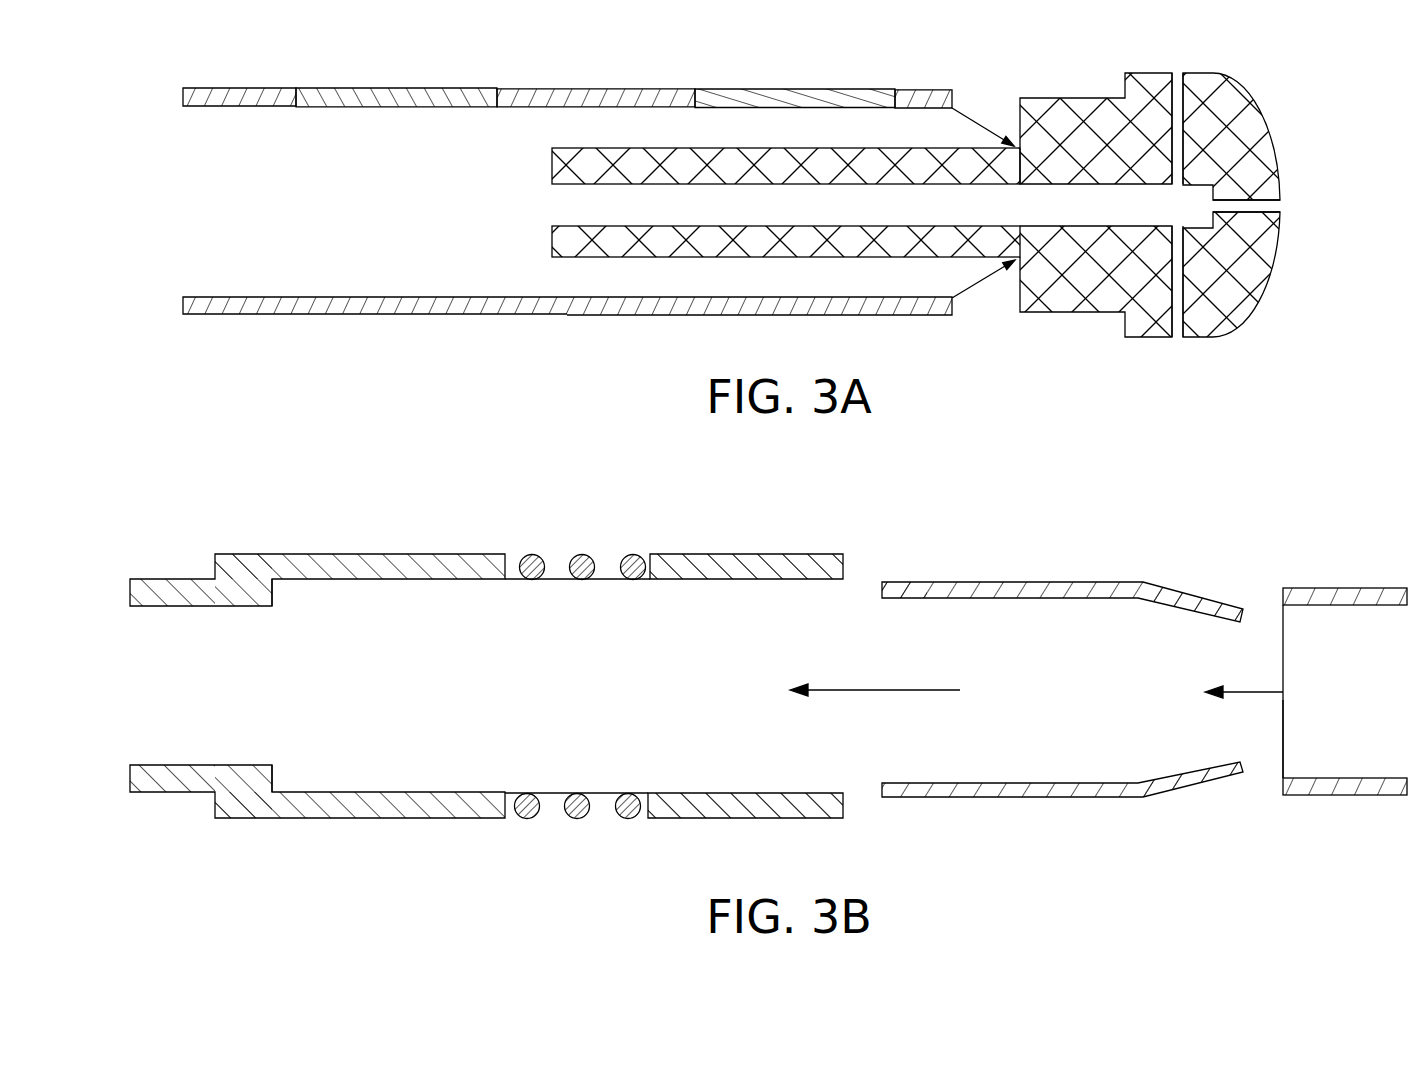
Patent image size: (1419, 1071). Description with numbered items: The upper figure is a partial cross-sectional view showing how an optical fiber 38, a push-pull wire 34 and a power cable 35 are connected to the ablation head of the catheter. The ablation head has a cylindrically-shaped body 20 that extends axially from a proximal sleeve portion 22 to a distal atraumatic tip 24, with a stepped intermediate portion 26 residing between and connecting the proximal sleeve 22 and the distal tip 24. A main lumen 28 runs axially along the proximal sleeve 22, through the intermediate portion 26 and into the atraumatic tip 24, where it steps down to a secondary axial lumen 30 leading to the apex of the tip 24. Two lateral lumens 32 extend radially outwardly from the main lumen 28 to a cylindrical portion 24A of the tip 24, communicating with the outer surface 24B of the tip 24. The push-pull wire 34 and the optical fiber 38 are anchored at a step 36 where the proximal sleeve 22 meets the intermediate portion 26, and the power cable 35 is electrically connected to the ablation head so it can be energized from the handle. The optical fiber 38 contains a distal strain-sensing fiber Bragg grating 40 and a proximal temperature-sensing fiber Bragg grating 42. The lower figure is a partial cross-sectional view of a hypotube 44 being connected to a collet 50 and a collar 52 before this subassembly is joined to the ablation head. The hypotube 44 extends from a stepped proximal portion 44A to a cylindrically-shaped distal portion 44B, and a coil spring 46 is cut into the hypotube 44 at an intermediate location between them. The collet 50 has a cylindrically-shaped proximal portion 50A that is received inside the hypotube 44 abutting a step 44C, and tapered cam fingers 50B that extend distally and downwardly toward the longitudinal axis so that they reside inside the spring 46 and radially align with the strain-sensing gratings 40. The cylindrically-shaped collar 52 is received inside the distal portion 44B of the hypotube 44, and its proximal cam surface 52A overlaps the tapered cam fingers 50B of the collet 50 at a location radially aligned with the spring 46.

In FIG. 3A, the cylindrically-shaped body 20 is at (1053, 97).
In FIG. 3A, the proximal sleeve portion 22 is at (548, 168).
In FIG. 3A, the distal atraumatic tip 24 is at (1200, 204).
In FIG. 3A, the cylindrical portion of the atraumatic tip 24A is at (1148, 338).
In FIG. 3A, the outer surface of the atraumatic tip 24B is at (1150, 72).
In FIG. 3A, the stepped intermediate portion 26 is at (1038, 305).
In FIG. 3A, the main lumen 28 is at (578, 205).
In FIG. 3A, the secondary axial lumen 30 is at (1268, 206).
In FIG. 3A, the lateral lumens 32 is at (1178, 73).
In FIG. 3A, the push-pull wire 34 is at (605, 307).
In FIG. 3A, the power cable 35 is at (390, 307).
In FIG. 3A, the step 36 is at (1017, 262).
In FIG. 3A, the optical fiber 38 is at (597, 92).
In FIG. 3A, the strain-sensing fiber Bragg grating 40 is at (805, 92).
In FIG. 3A, the temperature-sensing fiber Bragg grating 42 is at (410, 92).
In FIG. 3B, the hypotube 44 is at (487, 650).
In FIG. 3B, the stepped proximal portion of the hypotube 44A is at (232, 565).
In FIG. 3B, the cylindrically-shaped distal portion of the hypotube 44B is at (822, 567).
In FIG. 3B, the step 44C is at (272, 600).
In FIG. 3B, the coil spring 46 is at (522, 805).
In FIG. 3B, the collet 50 is at (1061, 655).
In FIG. 3B, the cylindrically-shaped proximal portion of the collet 50A is at (902, 590).
In FIG. 3B, the tapered cam fingers 50B is at (1192, 603).
In FIG. 3B, the collar 52 is at (1345, 725).
In FIG. 3B, the proximal cam surface 52A is at (1288, 773).